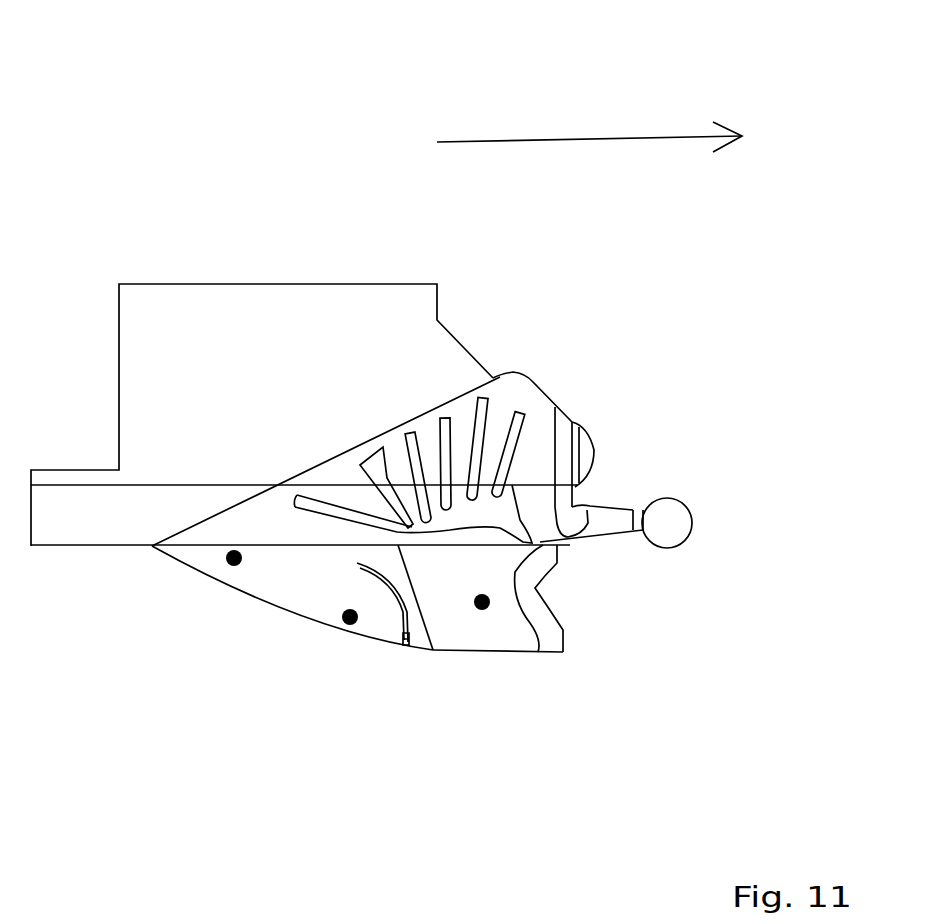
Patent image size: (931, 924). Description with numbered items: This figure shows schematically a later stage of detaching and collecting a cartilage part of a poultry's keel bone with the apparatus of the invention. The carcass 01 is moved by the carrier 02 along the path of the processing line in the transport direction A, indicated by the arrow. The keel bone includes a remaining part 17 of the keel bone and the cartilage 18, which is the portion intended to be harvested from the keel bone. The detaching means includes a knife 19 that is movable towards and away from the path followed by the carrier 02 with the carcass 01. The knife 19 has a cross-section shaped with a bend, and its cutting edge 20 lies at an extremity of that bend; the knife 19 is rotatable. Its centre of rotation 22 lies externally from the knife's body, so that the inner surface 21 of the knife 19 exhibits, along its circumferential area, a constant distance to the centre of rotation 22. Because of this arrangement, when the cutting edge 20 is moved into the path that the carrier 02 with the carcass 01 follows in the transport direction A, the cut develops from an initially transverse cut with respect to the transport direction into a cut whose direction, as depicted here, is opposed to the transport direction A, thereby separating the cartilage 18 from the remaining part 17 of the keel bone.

The carcass 01 is at (595, 452).
The carrier 02 is at (335, 283).
The remaining part of the keel bone 17 is at (486, 608).
The cartilage 18 is at (230, 562).
The knife 19 is at (407, 641).
The cutting edge 20 is at (357, 563).
The inner surface 21 is at (402, 612).
The centre of rotation 22 is at (348, 624).
The transport direction A is at (580, 123).